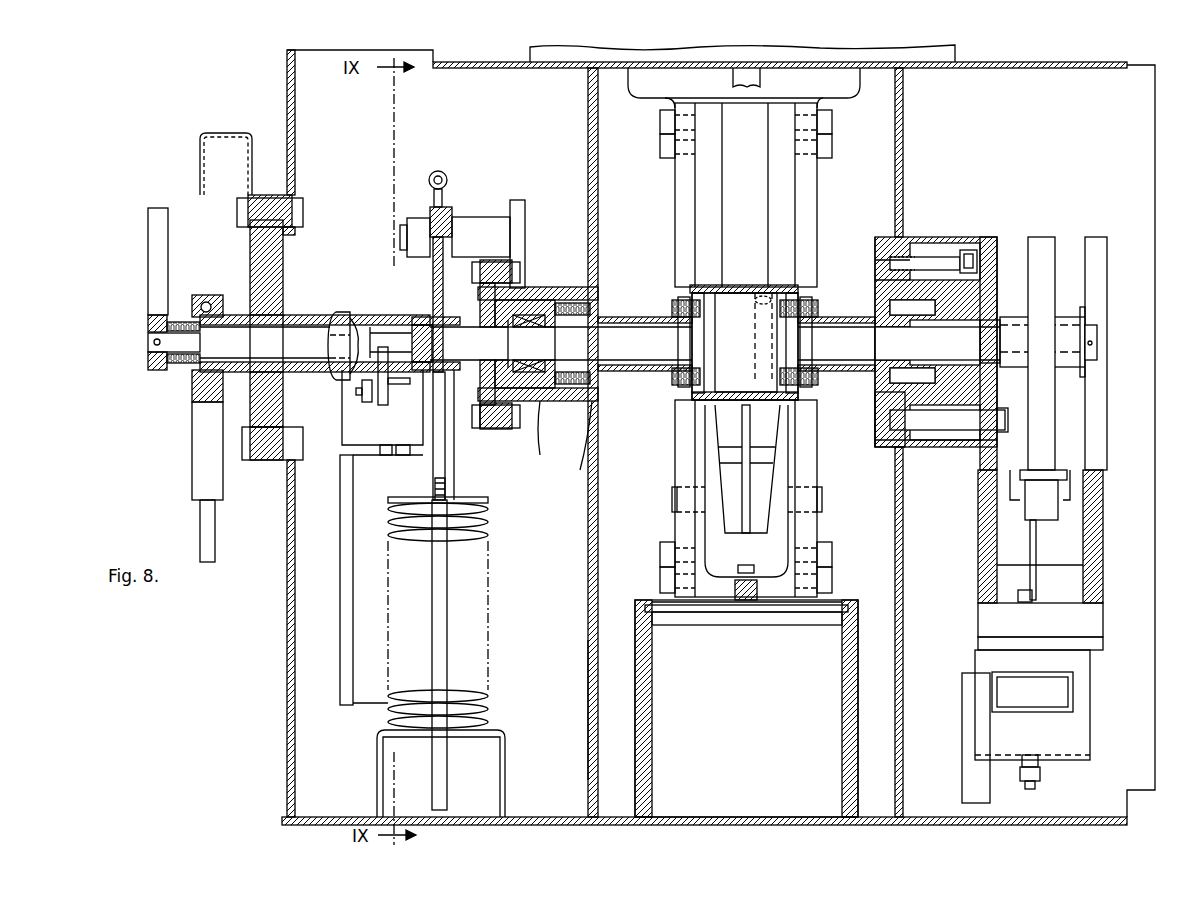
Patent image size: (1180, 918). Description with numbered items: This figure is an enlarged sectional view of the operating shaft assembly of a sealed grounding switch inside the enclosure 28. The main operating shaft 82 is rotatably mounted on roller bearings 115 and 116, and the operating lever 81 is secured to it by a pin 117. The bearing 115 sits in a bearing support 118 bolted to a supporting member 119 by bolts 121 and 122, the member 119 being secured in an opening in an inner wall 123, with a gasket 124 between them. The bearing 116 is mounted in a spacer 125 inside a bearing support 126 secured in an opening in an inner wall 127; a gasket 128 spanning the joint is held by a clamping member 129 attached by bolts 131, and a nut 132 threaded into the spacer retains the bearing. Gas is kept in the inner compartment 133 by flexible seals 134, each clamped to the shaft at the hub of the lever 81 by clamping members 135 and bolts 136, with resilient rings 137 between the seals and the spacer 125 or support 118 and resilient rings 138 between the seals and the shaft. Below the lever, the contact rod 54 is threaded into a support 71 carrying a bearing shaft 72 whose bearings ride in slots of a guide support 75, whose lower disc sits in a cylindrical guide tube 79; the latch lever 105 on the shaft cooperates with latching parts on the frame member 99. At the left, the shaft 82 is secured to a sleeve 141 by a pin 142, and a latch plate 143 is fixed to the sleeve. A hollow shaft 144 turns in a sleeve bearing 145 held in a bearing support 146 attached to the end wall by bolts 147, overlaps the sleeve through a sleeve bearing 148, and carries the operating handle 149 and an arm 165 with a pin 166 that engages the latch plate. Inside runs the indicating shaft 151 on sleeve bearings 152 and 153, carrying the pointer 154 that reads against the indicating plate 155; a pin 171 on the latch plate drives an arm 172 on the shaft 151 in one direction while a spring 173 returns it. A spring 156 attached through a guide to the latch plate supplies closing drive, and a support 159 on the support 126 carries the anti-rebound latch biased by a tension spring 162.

The enclosure 28 is at (287, 576).
The contact rod 54 is at (728, 225).
The support 71 is at (705, 460).
The bearing shaft 72 is at (672, 502).
The guide support 75 is at (678, 238).
The cylindrical guide tube 79 is at (640, 700).
The operating lever 81 is at (776, 290).
The main operating shaft 82 is at (876, 396).
The frame member 99 is at (978, 565).
The latch lever 105 is at (1040, 245).
The roller bearing 115 is at (987, 318).
The roller bearing 116 is at (545, 290).
The pin 117 is at (757, 298).
The bearing support 118 is at (935, 240).
The supporting member 119 is at (878, 238).
The bolt 121 is at (968, 250).
The bolt 122 is at (962, 428).
The inner wall 123 is at (903, 512).
The gasket 124 is at (876, 266).
The spacer 125 is at (554, 434).
The bearing support 126 is at (582, 470).
The inner wall 127 is at (590, 565).
The gasket 128 is at (495, 430).
The clamping member 129 is at (485, 430).
The bolt 131 is at (520, 272).
The nut 132 is at (482, 318).
The inner compartment 133 is at (588, 625).
The flexible seal 134 is at (616, 372).
The clamping member 135 is at (690, 297).
The bolt 136 is at (672, 310).
The resilient ring 137 is at (930, 318).
The resilient ring 138 is at (690, 343).
The sleeve 141 is at (456, 400).
The pin 142 is at (456, 345).
The latch plate 143 is at (431, 320).
The hollow shaft 144 is at (305, 315).
The sleeve bearing 145 is at (289, 318).
The bearing support 146 is at (250, 238).
The bolt 147 is at (238, 214).
The sleeve bearing 148 is at (386, 405).
The operating handle 149 is at (194, 404).
The indicating shaft 151 is at (232, 345).
The sleeve bearing 152 is at (180, 364).
The sleeve bearing 153 is at (416, 320).
The pointer 154 is at (148, 262).
The indicating plate 155 is at (226, 120).
The spring 156 is at (488, 702).
The support 159 is at (438, 171).
The tension spring 162 is at (447, 178).
The arm 165 is at (346, 312).
The pin 166 is at (354, 330).
The pin 171 is at (400, 384).
The arm 172 is at (391, 441).
The spring 173 is at (368, 402).